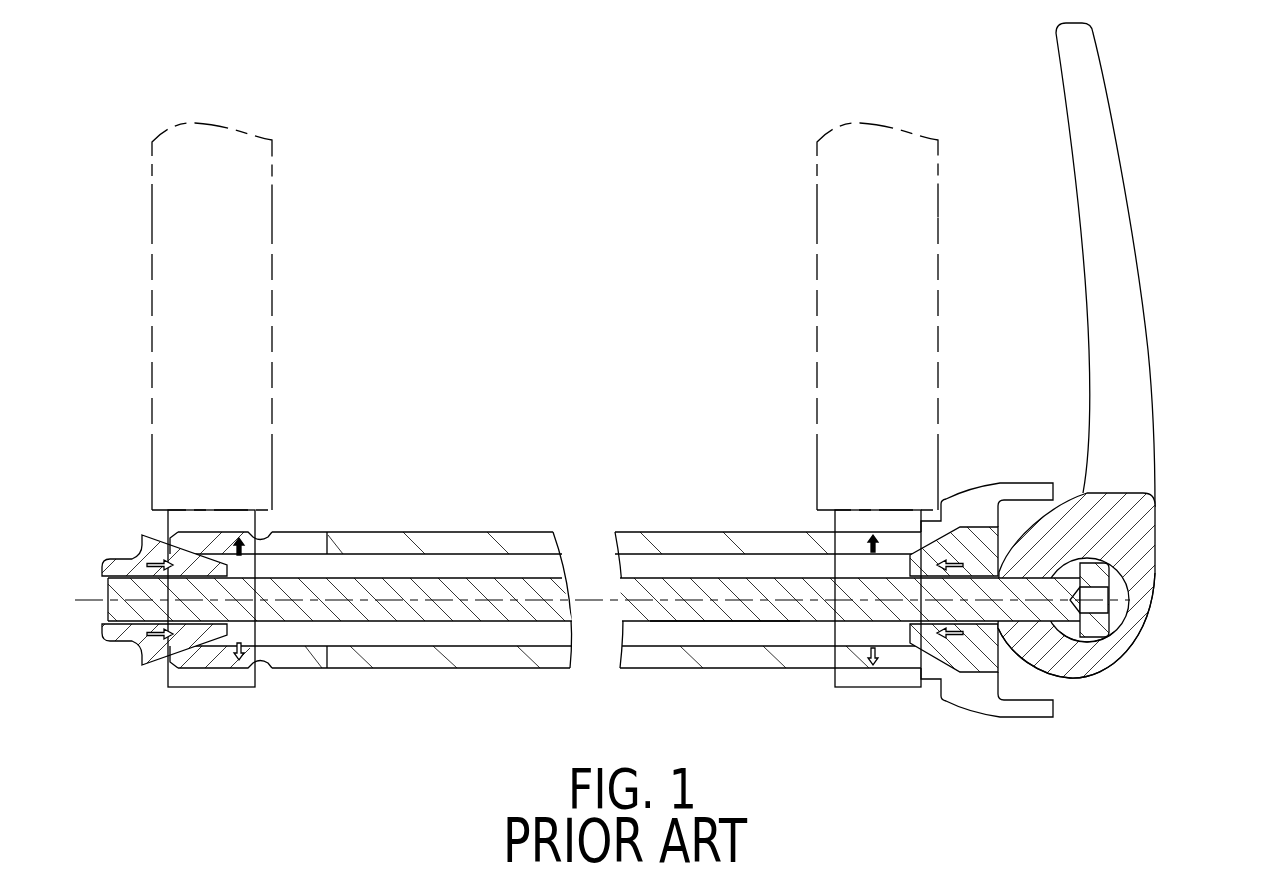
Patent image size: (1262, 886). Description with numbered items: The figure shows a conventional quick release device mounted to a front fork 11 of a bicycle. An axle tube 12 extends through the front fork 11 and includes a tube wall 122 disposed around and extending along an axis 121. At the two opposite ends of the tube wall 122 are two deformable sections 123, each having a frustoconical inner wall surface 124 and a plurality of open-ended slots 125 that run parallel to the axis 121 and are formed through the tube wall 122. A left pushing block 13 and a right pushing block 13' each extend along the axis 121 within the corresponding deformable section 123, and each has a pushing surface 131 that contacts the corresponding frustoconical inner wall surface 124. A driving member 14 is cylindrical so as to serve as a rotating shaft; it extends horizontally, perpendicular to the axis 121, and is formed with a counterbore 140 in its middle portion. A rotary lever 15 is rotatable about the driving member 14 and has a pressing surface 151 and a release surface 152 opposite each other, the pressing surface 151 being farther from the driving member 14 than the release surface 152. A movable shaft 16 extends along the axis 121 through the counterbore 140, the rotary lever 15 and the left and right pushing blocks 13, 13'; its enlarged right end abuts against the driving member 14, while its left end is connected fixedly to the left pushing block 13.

The front fork 11 is at (144, 181).
The axle tube 12 is at (594, 681).
The tube wall 122 is at (594, 599).
The axis 121 is at (1130, 600).
The deformable section 123 is at (307, 670).
The frustoconical inner wall surface 124 is at (188, 660).
The open-ended slot 125 is at (193, 540).
The left pushing block 13 is at (487, 617).
The pushing surface 131 is at (150, 553).
The right pushing block 13' is at (952, 646).
The driving member 14 is at (1077, 656).
The counterbore 140 is at (1092, 642).
The rotary lever 15 is at (1110, 366).
The pressing surface 151 is at (1025, 535).
The release surface 152 is at (1133, 648).
The movable shaft 16 is at (715, 634).